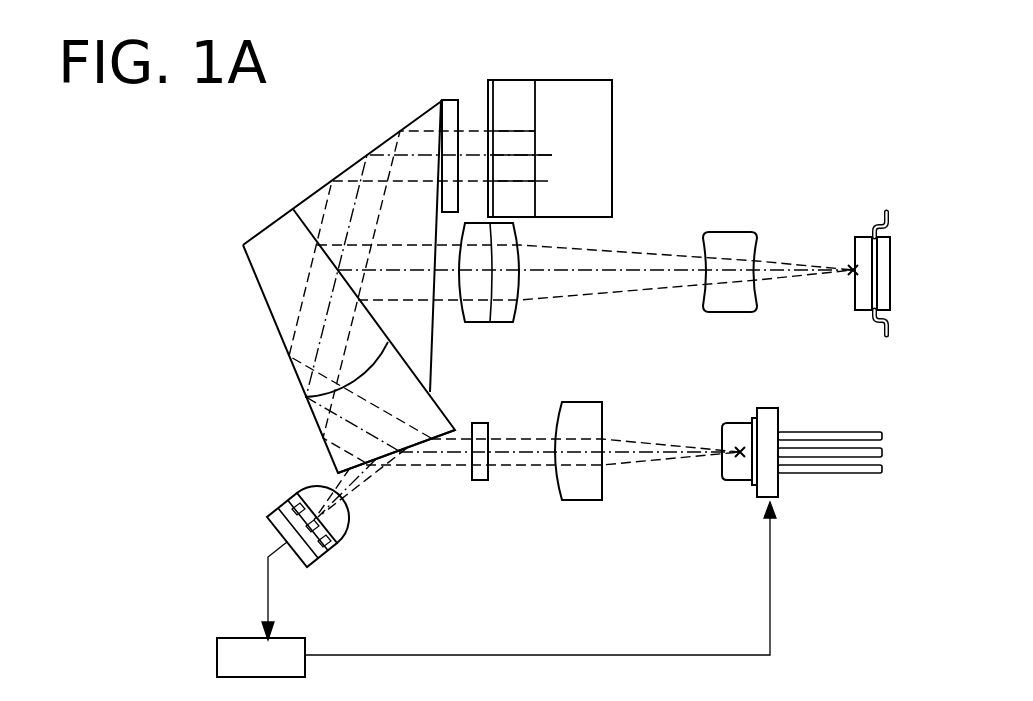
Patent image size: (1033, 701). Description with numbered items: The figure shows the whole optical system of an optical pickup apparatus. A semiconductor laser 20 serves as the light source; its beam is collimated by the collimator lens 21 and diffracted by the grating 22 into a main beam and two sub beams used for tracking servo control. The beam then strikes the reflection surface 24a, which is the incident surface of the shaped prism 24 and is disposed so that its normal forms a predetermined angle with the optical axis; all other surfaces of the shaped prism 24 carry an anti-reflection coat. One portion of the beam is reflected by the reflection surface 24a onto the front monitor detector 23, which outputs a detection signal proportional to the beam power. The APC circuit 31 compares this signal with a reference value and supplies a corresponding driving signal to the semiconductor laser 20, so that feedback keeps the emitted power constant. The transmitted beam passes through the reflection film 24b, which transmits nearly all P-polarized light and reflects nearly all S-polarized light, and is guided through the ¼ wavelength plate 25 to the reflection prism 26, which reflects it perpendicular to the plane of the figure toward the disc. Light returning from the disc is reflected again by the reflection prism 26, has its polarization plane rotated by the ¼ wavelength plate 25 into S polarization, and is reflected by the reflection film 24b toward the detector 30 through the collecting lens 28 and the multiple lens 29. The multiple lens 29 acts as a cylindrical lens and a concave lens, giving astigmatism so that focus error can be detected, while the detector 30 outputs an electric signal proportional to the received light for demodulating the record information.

The semiconductor laser 20 is at (771, 408).
The collimator lens 21 is at (590, 402).
The grating 22 is at (478, 423).
The front monitor detector 23 is at (333, 550).
The shaped prism 24 is at (268, 307).
The reflection surface 24a is at (373, 463).
The reflection film 24b is at (313, 412).
The ¼ wavelength plate 25 is at (452, 100).
The reflection prism 26 is at (557, 80).
The collecting lens 28 is at (497, 322).
The multiple lens 29 is at (720, 312).
The detector 30 is at (860, 312).
The APC circuit 31 is at (297, 638).